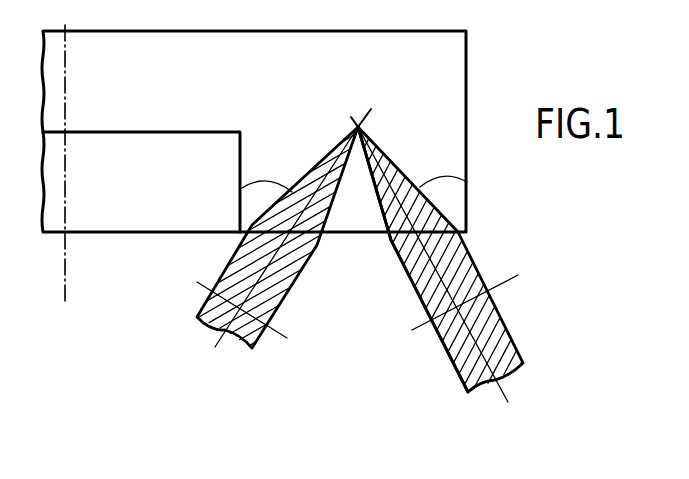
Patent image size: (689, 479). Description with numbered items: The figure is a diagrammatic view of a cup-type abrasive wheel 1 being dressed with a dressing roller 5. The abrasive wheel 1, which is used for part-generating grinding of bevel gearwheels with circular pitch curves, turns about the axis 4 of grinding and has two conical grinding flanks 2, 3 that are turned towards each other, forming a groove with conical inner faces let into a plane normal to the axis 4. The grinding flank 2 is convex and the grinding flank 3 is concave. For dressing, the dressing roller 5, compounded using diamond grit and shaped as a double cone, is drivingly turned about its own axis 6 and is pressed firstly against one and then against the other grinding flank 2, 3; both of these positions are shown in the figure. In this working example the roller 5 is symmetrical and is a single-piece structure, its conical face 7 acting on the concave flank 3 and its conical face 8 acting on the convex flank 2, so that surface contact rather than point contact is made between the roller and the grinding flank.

The cup-type abrasive wheel 1 is at (458, 70).
The convex grinding flank 2 is at (240, 188).
The concave grinding flank 3 is at (467, 182).
The axis of grinding 4 is at (66, 285).
The dressing roller 5 is at (510, 336).
The axis of dressing roller 6 is at (512, 280).
The conical face 7 is at (391, 237).
The conical face 8 is at (308, 236).